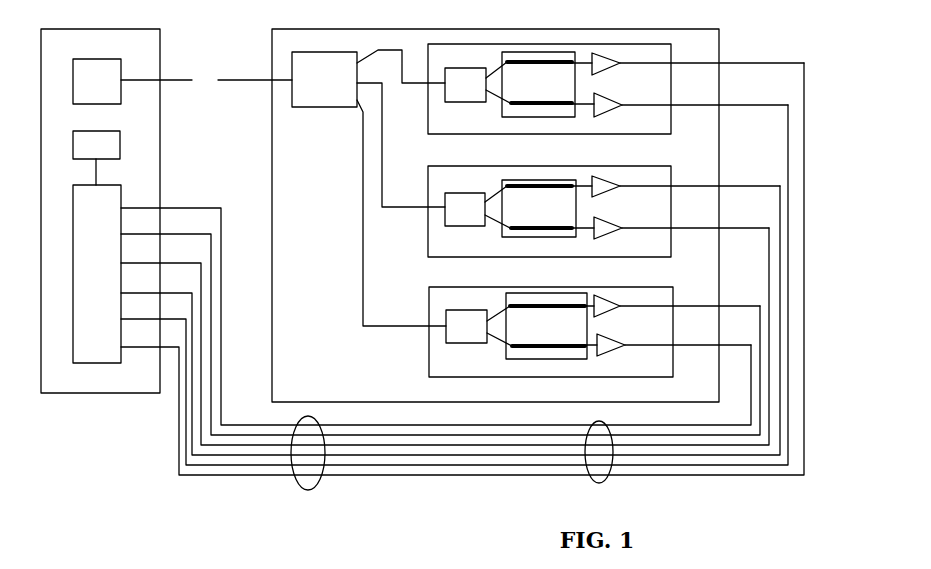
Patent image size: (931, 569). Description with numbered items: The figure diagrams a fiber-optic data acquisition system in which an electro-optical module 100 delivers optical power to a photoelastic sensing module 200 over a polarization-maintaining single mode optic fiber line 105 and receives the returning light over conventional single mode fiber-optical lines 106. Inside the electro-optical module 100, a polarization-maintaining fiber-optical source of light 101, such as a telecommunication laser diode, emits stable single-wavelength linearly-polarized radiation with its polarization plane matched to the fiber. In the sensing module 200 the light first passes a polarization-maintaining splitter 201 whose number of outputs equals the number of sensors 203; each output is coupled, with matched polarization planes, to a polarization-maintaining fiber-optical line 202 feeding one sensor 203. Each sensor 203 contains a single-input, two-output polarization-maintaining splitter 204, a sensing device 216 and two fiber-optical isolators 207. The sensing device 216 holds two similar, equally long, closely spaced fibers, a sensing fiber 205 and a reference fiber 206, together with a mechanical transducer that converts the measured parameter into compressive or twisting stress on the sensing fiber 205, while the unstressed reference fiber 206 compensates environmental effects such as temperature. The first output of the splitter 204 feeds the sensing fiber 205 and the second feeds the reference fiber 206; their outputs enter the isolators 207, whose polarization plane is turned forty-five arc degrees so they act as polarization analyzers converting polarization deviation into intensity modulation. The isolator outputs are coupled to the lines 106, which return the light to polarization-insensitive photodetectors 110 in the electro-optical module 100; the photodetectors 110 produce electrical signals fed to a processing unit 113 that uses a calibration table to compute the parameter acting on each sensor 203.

The electro-optical module 100 is at (47, 395).
The fiber-optical source of light 101 is at (122, 63).
The polarization-maintaining single mode optic fiber line 105 is at (170, 80).
The processing unit 113 is at (121, 146).
The photodetectors 110 is at (105, 363).
The single mode fiber-optical lines 106 is at (318, 482).
The photoelastic sensing module 200 is at (719, 52).
The polarization-maintaining splitter 201 is at (337, 110).
The polarization-maintaining single mode fiber-optical lines 202 is at (402, 60).
The sensors 203 is at (672, 123).
The polarization-maintaining splitter 204 is at (445, 340).
The sensing device 216 is at (505, 358).
The sensing fiber 205 is at (537, 342).
The reference fiber 206 is at (567, 309).
The fiber-optical isolators 207 is at (615, 308).